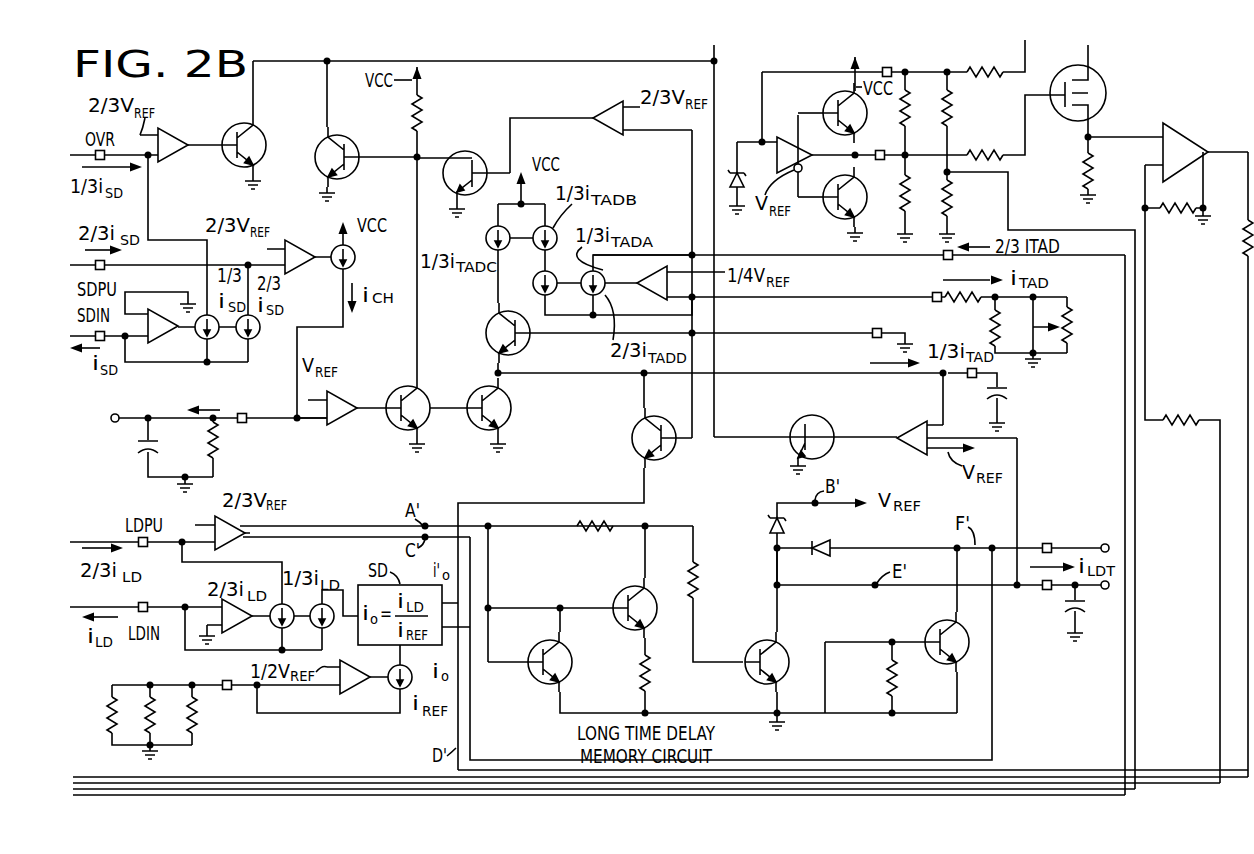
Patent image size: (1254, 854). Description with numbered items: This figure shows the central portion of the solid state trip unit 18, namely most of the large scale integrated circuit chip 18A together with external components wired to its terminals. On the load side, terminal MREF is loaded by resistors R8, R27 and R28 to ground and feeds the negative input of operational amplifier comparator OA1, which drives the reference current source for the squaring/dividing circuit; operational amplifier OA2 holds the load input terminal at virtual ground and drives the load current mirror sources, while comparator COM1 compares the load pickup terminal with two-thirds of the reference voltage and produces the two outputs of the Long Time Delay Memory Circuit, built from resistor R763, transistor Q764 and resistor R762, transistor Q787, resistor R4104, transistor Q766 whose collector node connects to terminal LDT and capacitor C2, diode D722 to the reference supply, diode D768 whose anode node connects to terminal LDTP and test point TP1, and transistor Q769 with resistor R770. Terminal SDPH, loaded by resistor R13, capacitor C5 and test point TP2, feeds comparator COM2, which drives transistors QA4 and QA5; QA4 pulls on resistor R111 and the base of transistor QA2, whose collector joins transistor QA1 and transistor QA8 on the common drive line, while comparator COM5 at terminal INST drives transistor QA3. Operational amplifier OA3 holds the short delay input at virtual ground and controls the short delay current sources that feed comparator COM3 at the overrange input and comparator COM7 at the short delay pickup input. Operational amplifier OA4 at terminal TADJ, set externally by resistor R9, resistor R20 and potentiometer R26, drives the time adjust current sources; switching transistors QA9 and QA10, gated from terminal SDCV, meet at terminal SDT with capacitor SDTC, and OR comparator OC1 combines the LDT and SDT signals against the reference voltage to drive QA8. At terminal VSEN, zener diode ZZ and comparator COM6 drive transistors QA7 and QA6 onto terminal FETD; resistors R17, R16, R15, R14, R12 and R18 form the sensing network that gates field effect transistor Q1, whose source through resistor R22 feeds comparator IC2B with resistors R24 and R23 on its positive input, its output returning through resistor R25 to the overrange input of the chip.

The comparator COM3 is at (190, 124).
The transistor QA1 is at (266, 152).
The transistor QA2 is at (316, 144).
The resistive element R111 is at (410, 113).
The transistor QA3 is at (466, 151).
The large scale integrated circuit chip 18A is at (512, 96).
The comparator COM5 is at (612, 105).
The operational amplifier OA4 is at (652, 278).
The switching transistor QA9 is at (490, 352).
The comparator COM2 is at (345, 425).
The transistor QA4 is at (398, 388).
The transistor QA5 is at (508, 425).
The switching transistor QA10 is at (632, 430).
The operational amplifier OA3 is at (165, 336).
The comparator COM7 is at (305, 234).
The test point TP2 is at (113, 413).
The SDPH terminal SDPH is at (248, 413).
The capacitive element C5 is at (136, 446).
The resistive element R13 is at (220, 452).
The trip unit 18 is at (348, 500).
The comparator COM1 is at (236, 542).
The operational amplifier OA2 is at (232, 626).
The operational amplifier comparator OA1 is at (356, 693).
The MREF terminal MREF is at (225, 680).
The resistive element R28 is at (108, 738).
The resistive element R27 is at (158, 735).
The resistive element R8 is at (200, 732).
The resistive element R763 is at (580, 530).
The resistive element R4104 is at (700, 585).
The transistor Q764 is at (612, 600).
The resistive element R762 is at (640, 680).
The transistor Q787 is at (530, 683).
The transistor Q766 is at (789, 645).
The diode D722 is at (765, 524).
The diode D768 is at (832, 543).
The transistor Q769 is at (940, 622).
The resistive element R770 is at (900, 700).
The LDTP terminal LDTP is at (1047, 543).
The test point TP1 is at (1106, 533).
The LDT terminal LDT is at (1047, 590).
The capacitive element C2 is at (1087, 610).
The transistor QA8 is at (792, 444).
The OR comparator OC1 is at (910, 430).
The INST terminal INST is at (942, 260).
The TADJ terminal TADJ is at (932, 302).
The resistive element R9 is at (968, 305).
The resistive element R20 is at (1000, 322).
The potentiometer element R26 is at (1072, 308).
The SDCV terminal SDCV is at (872, 330).
The SDT terminal SDT is at (970, 378).
The capacitive element SDTC is at (1010, 398).
The VSEN terminal VSEN is at (907, 62).
The comparator COM6 is at (783, 137).
The zener diode ZZ is at (730, 190).
The transistor QA7 is at (830, 133).
The transistor QA6 is at (826, 212).
The FETD terminal FETD is at (882, 150).
The resistive element R15 is at (910, 122).
The resistive element R14 is at (910, 200).
The resistive element R16 is at (953, 118).
The resistive element R12 is at (953, 205).
The resistive element R17 is at (982, 78).
The resistive element R18 is at (1000, 160).
The field effect transistor Q1 is at (1105, 80).
The resistive element R22 is at (1080, 165).
The comparator IC2B is at (1190, 138).
The resistive element R25 is at (1246, 228).
The resistive element R24 is at (1170, 215).
The resistive element R23 is at (1183, 415).